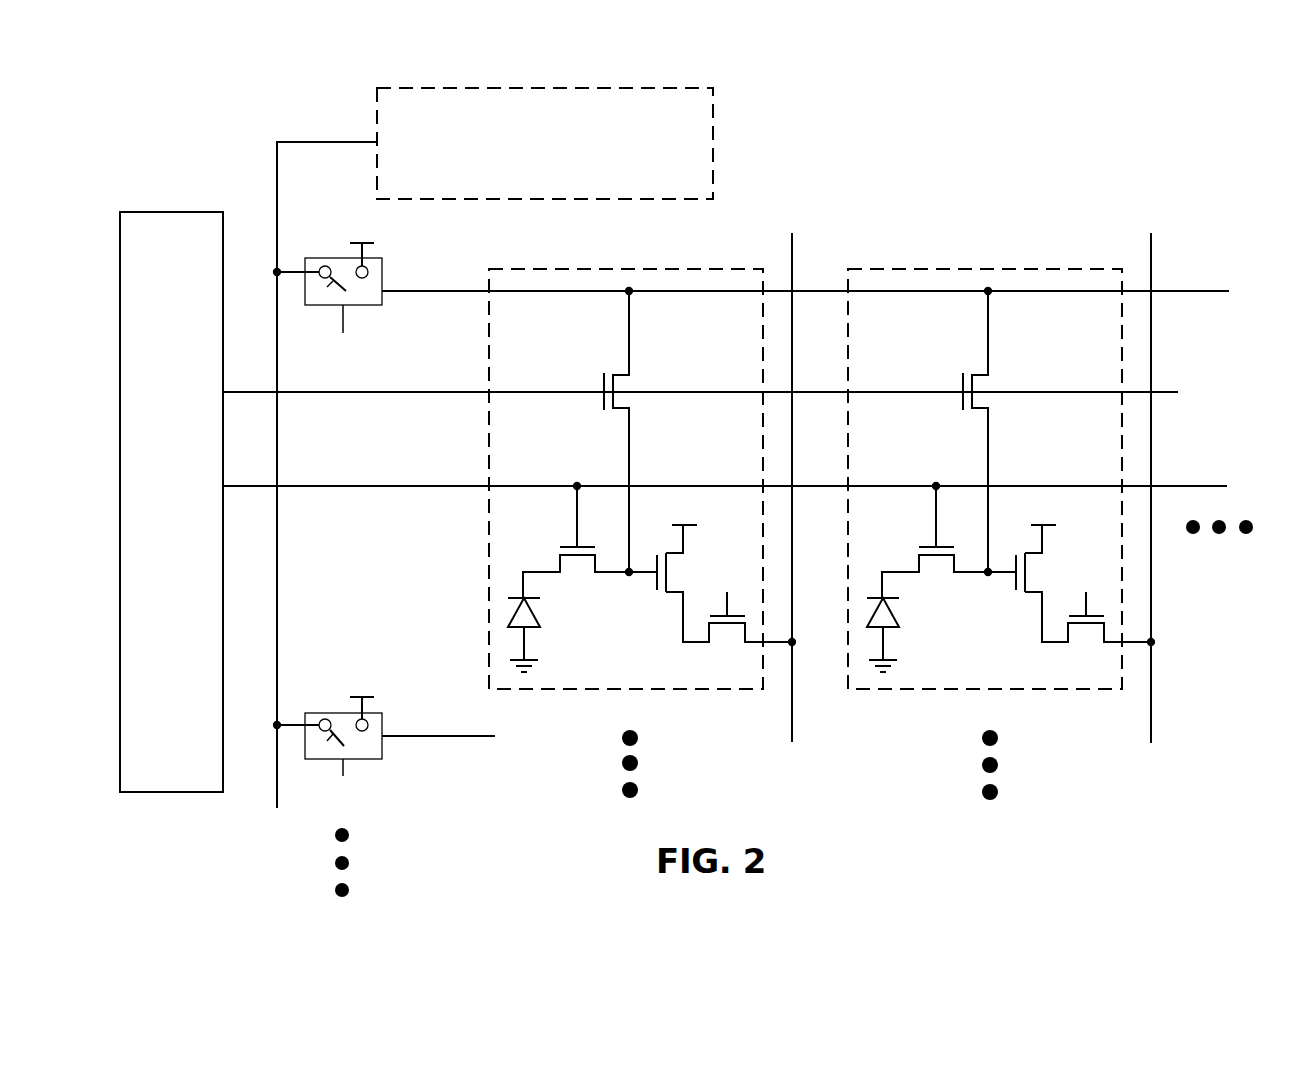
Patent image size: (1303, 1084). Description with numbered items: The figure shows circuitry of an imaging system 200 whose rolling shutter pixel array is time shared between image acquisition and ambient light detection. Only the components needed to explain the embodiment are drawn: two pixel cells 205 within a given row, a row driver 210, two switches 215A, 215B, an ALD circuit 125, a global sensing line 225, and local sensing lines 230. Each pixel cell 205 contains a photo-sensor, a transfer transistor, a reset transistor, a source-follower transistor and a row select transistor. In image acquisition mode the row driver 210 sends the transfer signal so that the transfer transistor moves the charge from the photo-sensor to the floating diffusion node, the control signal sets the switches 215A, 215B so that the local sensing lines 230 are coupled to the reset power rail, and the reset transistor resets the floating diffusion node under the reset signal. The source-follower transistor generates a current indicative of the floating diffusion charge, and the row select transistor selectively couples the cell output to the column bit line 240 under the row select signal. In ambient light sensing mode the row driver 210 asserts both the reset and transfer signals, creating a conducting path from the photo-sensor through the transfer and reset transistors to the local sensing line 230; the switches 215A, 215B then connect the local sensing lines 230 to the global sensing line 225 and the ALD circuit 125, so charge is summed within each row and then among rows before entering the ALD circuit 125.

The imaging system 200 is at (1017, 140).
The row driver 210 is at (673, 502).
The global sensing line 225 is at (292, 140).
The ALD circuit 125 is at (545, 143).
The switch 215A is at (384, 283).
The switch 215B is at (384, 723).
The local sensing line 230 is at (1196, 295).
The column bit line 240 is at (794, 720).
The pixel cell 205 is at (822, 479).